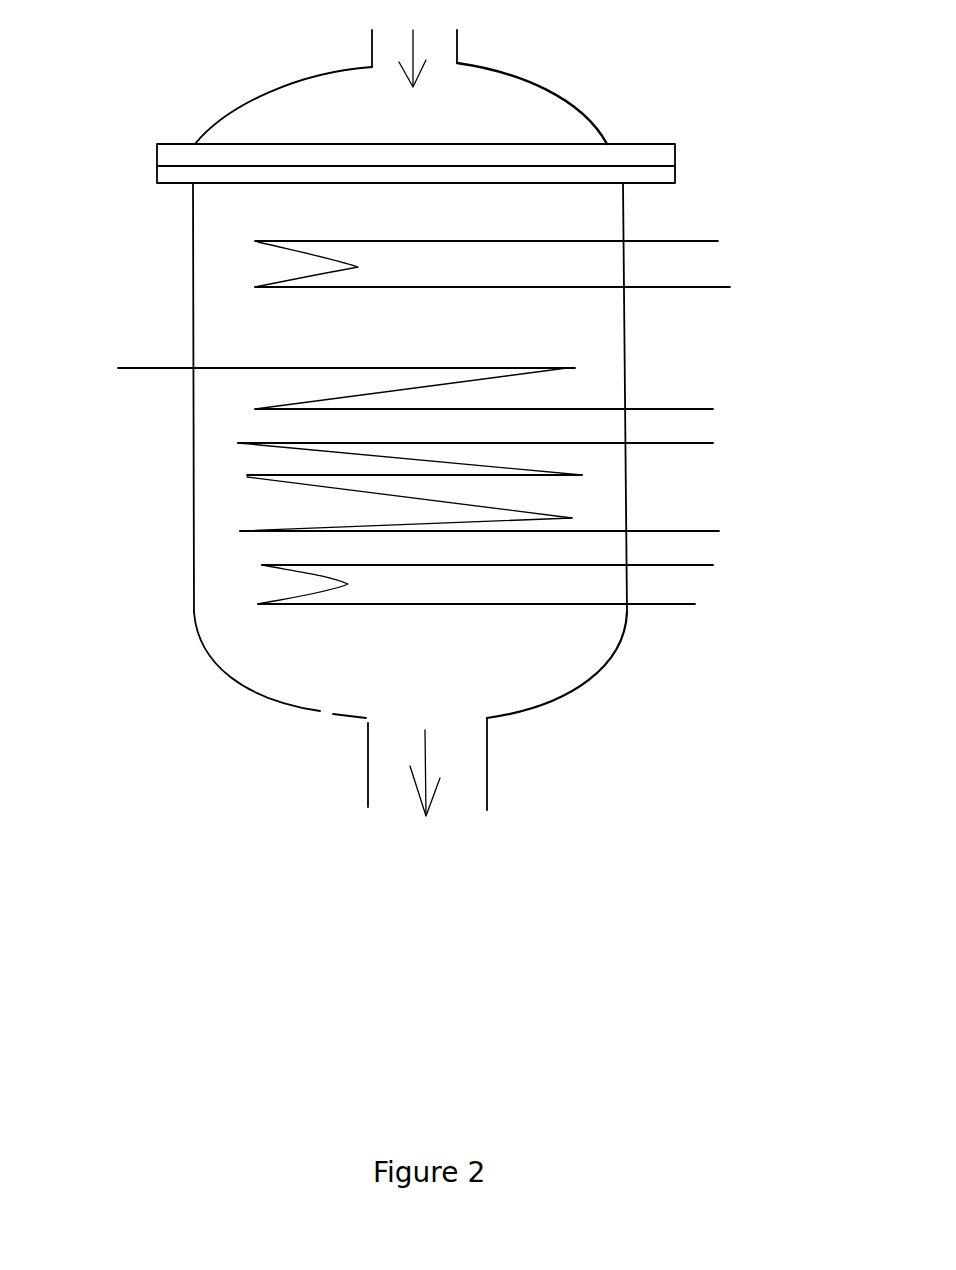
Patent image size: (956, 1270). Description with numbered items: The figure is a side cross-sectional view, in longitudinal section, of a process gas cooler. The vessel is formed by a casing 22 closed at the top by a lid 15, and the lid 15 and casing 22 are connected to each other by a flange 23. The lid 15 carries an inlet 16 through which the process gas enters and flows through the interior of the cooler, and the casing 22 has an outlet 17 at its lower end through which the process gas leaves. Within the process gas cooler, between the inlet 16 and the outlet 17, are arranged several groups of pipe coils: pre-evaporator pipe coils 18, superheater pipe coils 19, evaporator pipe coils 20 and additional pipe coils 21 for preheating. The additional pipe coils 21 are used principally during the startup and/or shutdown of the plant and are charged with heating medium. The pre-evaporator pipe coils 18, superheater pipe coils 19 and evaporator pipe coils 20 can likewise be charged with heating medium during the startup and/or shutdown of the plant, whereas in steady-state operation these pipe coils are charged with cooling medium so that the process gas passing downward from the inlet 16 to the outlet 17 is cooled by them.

The lid 15 is at (565, 105).
The inlet 16 is at (457, 47).
The outlet 17 is at (487, 770).
The pre-evaporator pipe coils 18 is at (597, 241).
The superheater pipe coils 19 is at (593, 409).
The evaporator pipe coils 20 is at (657, 445).
The additional pipe coils 21 is at (662, 566).
The casing 22 is at (192, 265).
The flange 23 is at (155, 160).